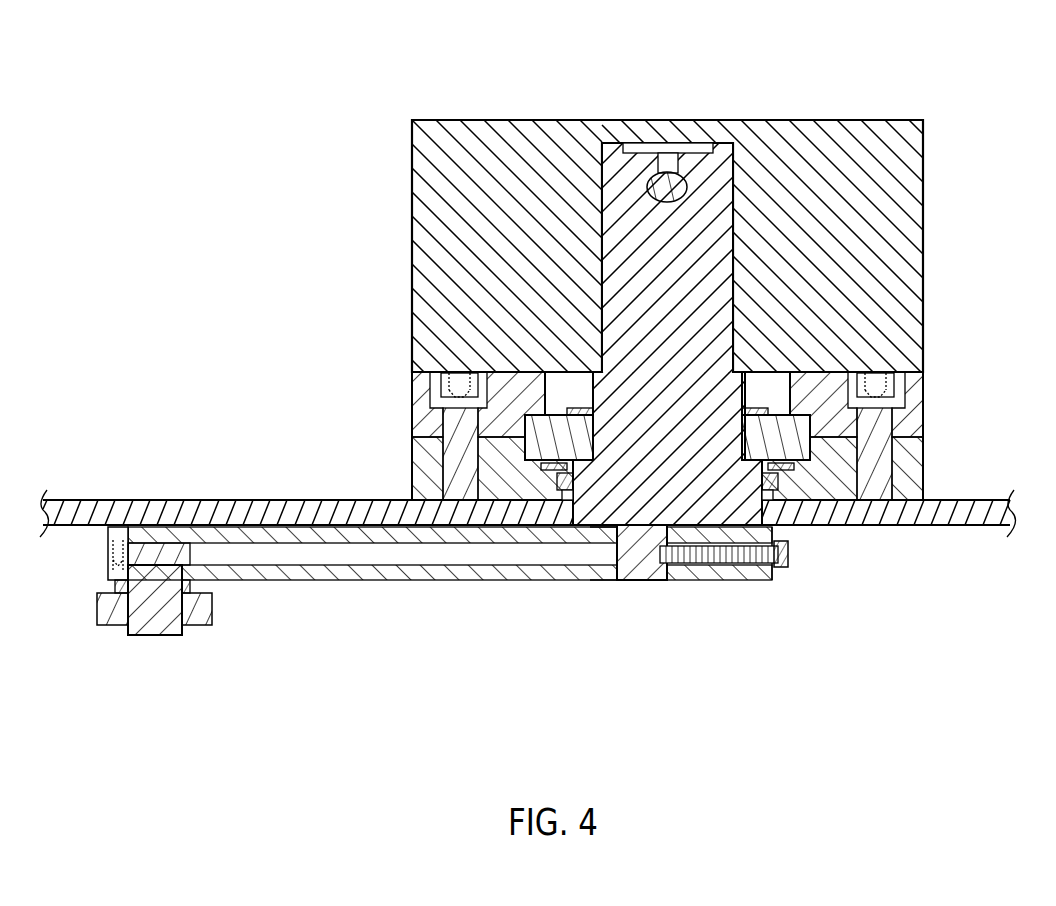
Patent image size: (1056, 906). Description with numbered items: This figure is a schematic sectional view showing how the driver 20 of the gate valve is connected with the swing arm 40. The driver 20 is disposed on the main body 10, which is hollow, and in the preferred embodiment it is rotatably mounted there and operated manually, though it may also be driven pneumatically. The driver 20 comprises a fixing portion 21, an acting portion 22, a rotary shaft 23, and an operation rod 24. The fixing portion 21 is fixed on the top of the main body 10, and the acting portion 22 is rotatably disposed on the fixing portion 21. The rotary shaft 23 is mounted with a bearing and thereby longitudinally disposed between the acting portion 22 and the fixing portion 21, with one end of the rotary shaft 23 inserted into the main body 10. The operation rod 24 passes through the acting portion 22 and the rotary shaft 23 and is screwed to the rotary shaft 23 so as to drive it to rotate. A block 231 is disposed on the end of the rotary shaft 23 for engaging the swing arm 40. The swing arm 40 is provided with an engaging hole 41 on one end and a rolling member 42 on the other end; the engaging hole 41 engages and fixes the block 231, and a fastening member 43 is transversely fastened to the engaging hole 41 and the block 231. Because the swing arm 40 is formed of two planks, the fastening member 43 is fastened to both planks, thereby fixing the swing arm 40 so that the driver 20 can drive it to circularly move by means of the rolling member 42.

The main body 10 is at (243, 496).
The driver 20 is at (659, 272).
The fixing portion 21 is at (925, 455).
The acting portion 22 is at (925, 287).
The rotary shaft 23 is at (720, 178).
The block 231 is at (640, 566).
The operation rod 24 is at (667, 172).
The swing arm 40 is at (388, 586).
The engaging hole 41 is at (605, 545).
The rolling member 42 is at (106, 615).
The fastening member 43 is at (730, 562).